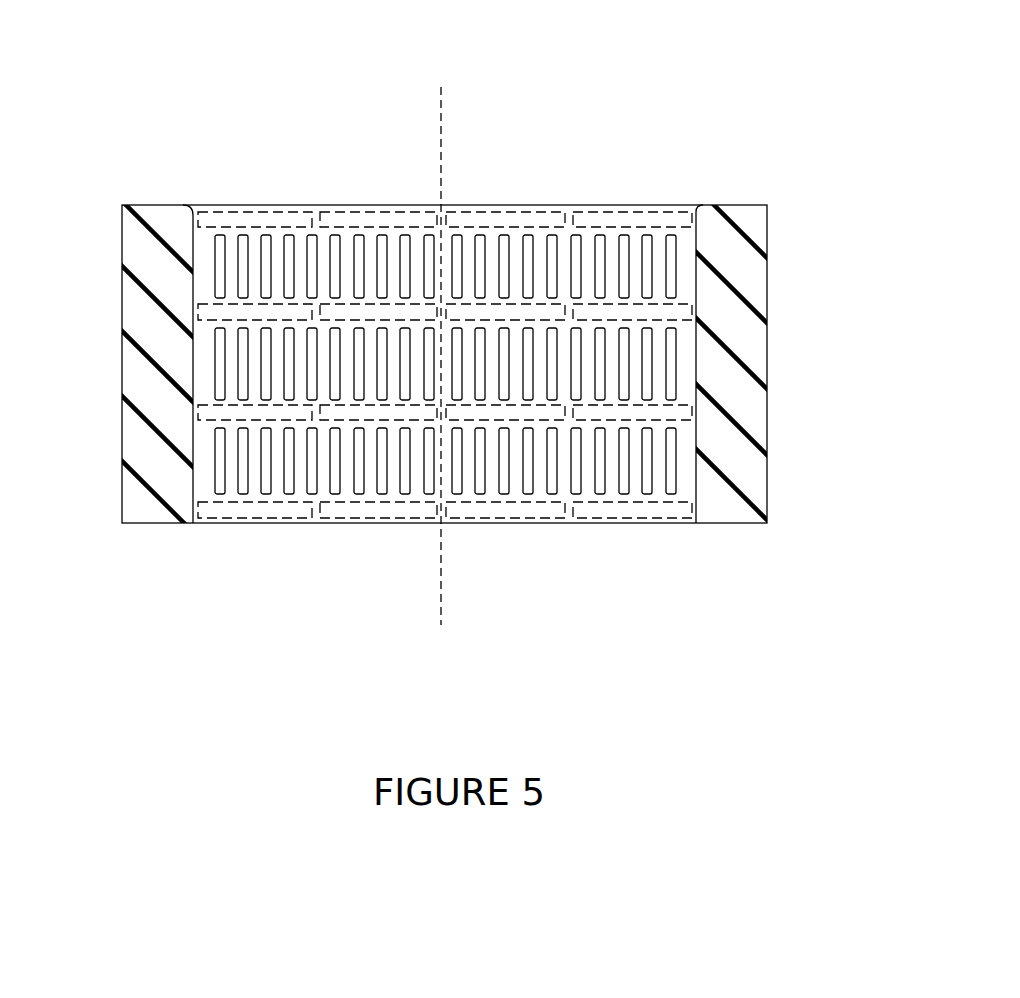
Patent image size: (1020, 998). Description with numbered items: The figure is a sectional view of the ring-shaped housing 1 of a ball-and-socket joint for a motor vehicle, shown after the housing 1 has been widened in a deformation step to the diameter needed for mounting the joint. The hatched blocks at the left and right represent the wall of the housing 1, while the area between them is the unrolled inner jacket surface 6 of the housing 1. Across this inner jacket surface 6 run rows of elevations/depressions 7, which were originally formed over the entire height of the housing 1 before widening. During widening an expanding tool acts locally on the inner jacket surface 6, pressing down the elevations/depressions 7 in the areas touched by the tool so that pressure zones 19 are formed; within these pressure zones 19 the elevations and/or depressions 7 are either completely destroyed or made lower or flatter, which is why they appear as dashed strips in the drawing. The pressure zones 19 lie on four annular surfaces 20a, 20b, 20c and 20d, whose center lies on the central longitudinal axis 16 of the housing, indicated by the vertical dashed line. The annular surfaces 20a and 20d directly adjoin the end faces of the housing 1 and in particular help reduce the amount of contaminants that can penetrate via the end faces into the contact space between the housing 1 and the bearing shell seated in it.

The housing 1 is at (750, 195).
The inner jacket surface 6 is at (688, 252).
The elevations/depressions 7 is at (675, 269).
The central longitudinal axis 16 is at (445, 127).
The pressure zones 19 is at (370, 309).
The annular surface 20a is at (220, 224).
The annular surface 20b is at (260, 315).
The annular surface 20c is at (217, 420).
The annular surface 20d is at (217, 511).